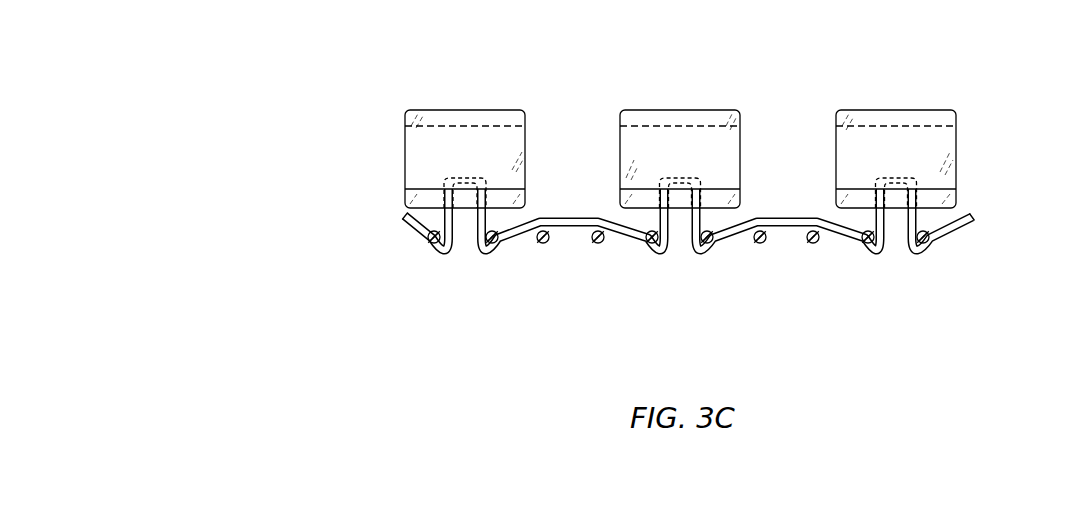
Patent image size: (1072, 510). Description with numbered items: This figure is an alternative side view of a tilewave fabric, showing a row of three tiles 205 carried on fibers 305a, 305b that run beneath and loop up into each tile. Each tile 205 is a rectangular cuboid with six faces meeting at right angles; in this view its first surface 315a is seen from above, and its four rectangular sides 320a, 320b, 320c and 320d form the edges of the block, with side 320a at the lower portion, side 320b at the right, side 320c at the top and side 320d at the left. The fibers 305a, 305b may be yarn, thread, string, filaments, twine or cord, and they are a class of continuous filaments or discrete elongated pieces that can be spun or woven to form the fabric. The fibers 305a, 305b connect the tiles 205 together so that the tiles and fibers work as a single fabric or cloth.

The tile 205 is at (680, 120).
The fiber 305a is at (548, 250).
The fiber 305b is at (414, 240).
The first surface 315a is at (465, 152).
The side 320a is at (933, 201).
The side 320b is at (960, 151).
The side 320c is at (895, 120).
The side 320d is at (404, 158).